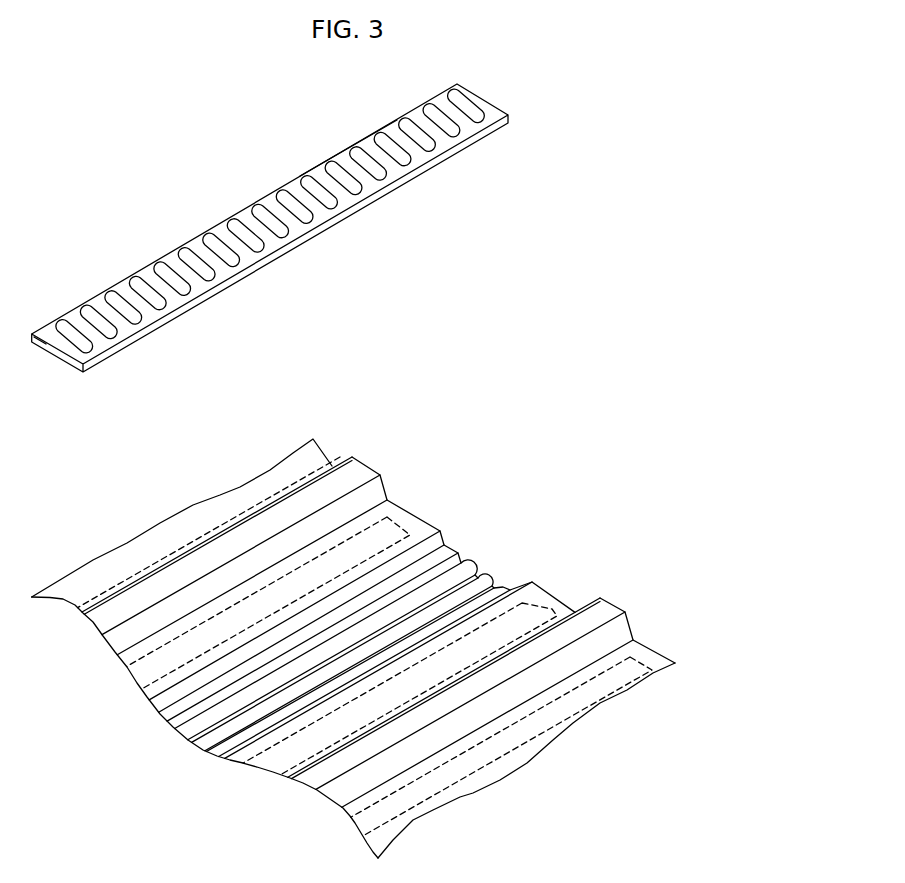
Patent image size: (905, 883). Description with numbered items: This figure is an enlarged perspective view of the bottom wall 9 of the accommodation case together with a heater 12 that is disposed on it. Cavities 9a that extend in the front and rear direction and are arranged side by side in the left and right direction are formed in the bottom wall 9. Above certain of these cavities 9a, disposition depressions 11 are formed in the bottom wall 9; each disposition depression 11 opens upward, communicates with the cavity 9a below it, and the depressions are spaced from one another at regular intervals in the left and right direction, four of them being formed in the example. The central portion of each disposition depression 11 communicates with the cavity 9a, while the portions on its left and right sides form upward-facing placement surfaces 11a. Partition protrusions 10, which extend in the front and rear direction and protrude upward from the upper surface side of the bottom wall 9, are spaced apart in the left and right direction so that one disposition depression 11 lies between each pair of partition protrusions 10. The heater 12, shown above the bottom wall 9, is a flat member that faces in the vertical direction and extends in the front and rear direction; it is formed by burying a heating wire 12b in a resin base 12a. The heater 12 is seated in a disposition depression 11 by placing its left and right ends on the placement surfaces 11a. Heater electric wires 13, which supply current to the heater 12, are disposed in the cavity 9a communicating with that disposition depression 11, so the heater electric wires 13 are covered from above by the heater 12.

The bottom wall 9 is at (550, 582).
The cavity 9a is at (43, 597).
The partition protrusion 10 is at (352, 474).
The disposition depression 11 is at (445, 558).
The placement surface 11a is at (452, 560).
The heater 12 is at (490, 112).
The resin base 12a is at (397, 176).
The heating wire 12b is at (294, 194).
The heater electric wire 13 is at (480, 568).